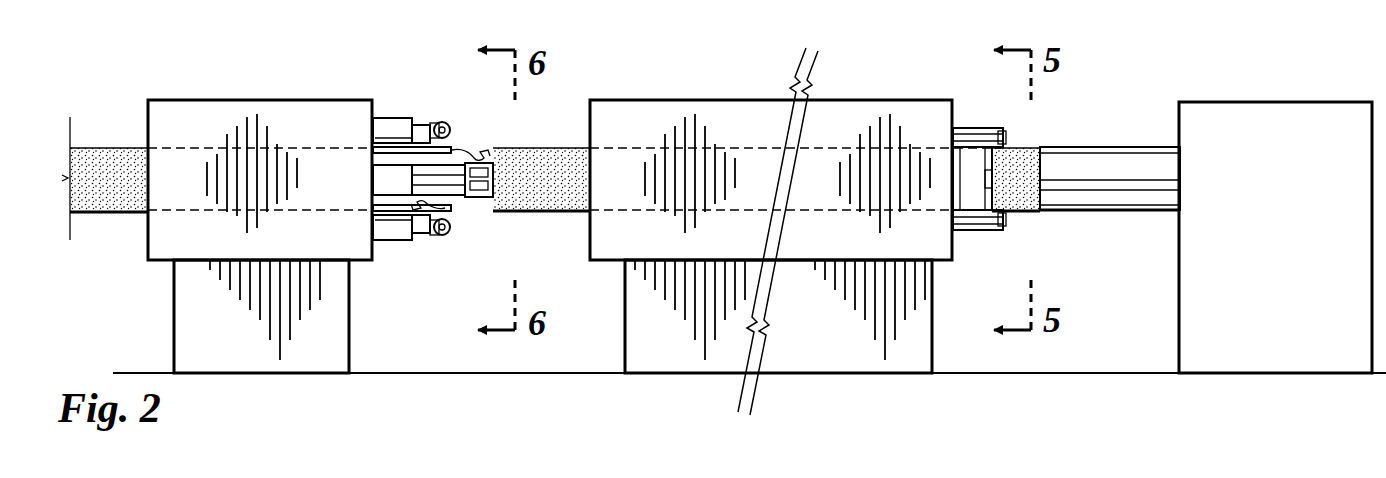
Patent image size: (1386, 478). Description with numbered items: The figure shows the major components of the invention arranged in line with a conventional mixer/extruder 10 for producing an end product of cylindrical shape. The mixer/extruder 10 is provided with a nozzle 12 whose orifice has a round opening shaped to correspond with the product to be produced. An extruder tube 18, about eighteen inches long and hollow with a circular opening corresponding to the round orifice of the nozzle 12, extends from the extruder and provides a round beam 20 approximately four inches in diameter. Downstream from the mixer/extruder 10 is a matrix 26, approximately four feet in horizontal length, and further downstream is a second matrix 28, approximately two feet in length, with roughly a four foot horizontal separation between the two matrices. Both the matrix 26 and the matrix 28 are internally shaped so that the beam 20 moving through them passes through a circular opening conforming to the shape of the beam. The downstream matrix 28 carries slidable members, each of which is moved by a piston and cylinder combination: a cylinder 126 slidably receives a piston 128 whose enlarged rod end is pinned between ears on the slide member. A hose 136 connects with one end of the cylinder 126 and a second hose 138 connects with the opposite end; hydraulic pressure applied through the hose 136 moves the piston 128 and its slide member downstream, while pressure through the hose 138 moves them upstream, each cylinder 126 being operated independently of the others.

The mixer/extruder 10 is at (1288, 113).
The nozzle (outlet) 12 is at (1175, 146).
The extruder tube 18 is at (1105, 147).
The round beam 20 is at (1025, 146).
The matrix 26 is at (846, 125).
The second matrix 28 is at (250, 110).
The cylinder 126 is at (398, 128).
The piston 128 is at (418, 126).
The hose 136 is at (397, 116).
The second hose 138 is at (110, 103).